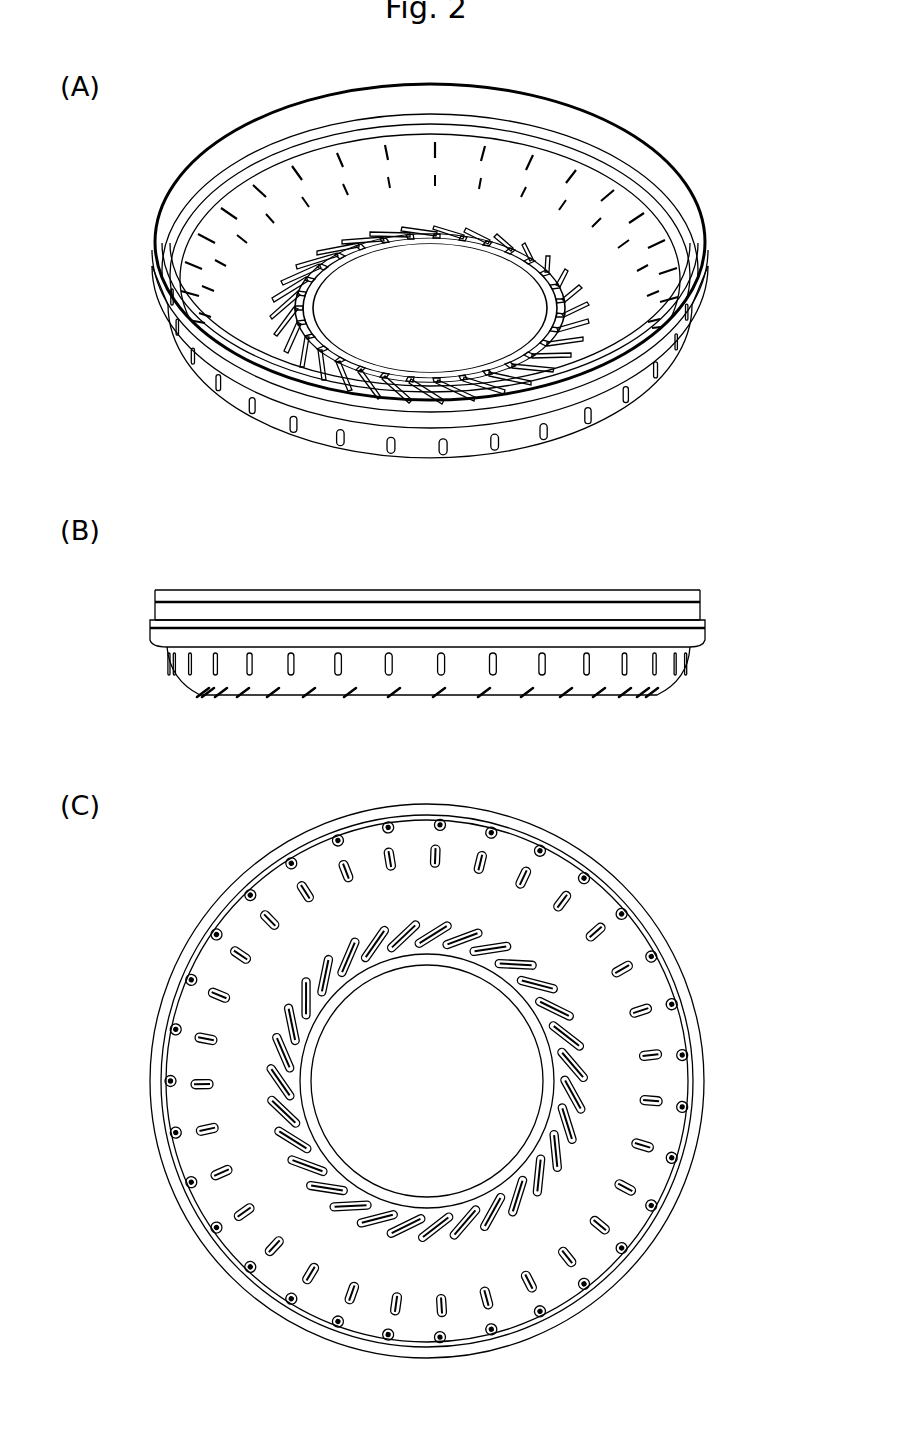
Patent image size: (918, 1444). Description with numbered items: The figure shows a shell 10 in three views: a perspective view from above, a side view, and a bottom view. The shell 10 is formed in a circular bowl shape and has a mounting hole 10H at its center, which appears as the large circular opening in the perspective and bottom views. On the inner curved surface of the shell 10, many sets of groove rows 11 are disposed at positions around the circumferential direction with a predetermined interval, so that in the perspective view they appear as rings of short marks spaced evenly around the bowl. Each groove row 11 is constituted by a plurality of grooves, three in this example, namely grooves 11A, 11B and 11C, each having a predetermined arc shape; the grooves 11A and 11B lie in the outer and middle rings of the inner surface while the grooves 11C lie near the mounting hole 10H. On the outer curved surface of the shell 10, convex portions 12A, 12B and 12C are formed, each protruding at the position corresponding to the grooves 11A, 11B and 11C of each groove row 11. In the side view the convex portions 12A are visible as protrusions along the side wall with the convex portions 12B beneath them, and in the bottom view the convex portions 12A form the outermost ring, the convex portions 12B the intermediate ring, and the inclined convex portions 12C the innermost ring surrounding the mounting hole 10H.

The shell 10 is at (158, 193).
The mounting hole 10H is at (350, 258).
The groove row 11 is at (596, 203).
The groove 11A is at (617, 203).
The groove 11B is at (608, 232).
The groove 11C is at (577, 283).
The convex portion 12A is at (646, 668).
The convex portion 12B is at (616, 697).
The convex portion 12C is at (557, 1006).